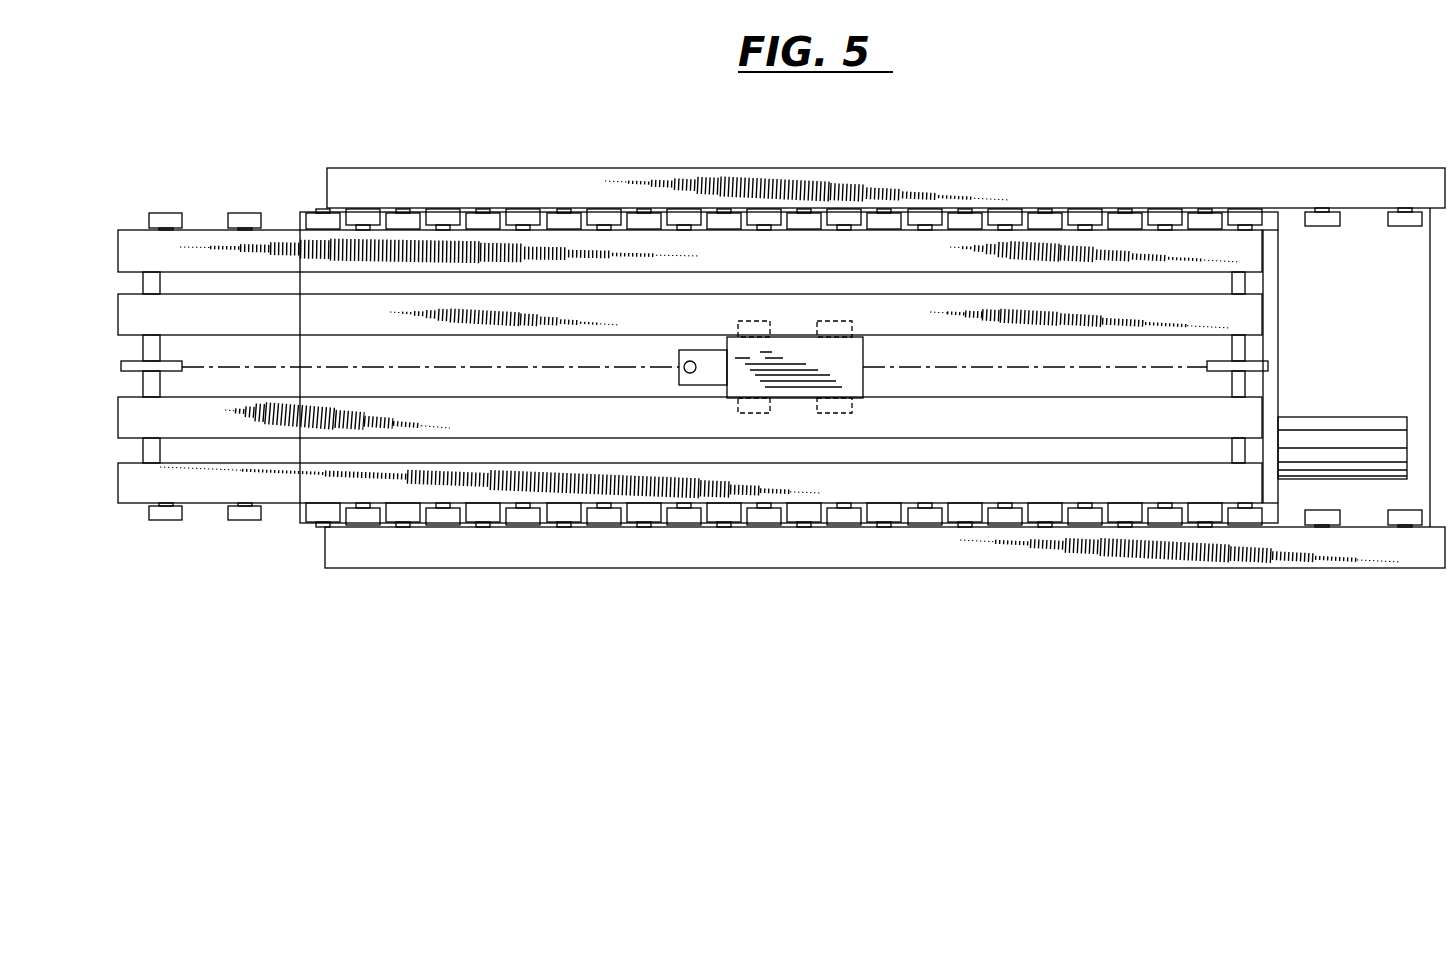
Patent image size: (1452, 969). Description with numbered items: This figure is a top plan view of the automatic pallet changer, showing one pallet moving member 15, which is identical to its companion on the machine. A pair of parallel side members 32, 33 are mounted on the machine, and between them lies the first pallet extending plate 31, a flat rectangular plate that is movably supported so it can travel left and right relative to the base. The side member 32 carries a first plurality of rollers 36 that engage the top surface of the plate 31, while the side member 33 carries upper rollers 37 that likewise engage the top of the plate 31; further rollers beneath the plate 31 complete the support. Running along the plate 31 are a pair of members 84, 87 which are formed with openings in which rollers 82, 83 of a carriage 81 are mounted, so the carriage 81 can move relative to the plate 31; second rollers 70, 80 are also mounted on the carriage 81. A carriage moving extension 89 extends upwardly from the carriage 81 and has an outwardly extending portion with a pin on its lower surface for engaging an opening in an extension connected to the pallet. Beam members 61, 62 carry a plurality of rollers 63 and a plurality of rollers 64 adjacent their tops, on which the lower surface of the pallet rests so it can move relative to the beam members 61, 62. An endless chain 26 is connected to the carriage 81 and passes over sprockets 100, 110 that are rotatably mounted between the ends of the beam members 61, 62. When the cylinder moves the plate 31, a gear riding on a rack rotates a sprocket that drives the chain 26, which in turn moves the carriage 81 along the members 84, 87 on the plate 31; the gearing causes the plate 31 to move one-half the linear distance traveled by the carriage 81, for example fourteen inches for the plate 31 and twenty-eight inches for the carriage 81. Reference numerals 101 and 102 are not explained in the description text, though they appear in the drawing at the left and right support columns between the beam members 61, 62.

The pallet moving member 15 is at (1397, 580).
The endless chain 26 is at (442, 367).
The first pallet extending plate 31 is at (1265, 389).
The side member 32 is at (1168, 548).
The side member 33 is at (1176, 190).
The first plurality of rollers 36 is at (402, 517).
The upper rollers 37 is at (446, 216).
The beam member 61 is at (1047, 482).
The beam member 62 is at (1243, 249).
The rollers 63 is at (165, 517).
The rollers 64 is at (402, 222).
The second roller 70 is at (845, 326).
The second roller 80 is at (835, 405).
The carriage 81 is at (788, 365).
The roller 82 is at (757, 403).
The roller 83 is at (738, 330).
The member 84 is at (368, 422).
The member 87 is at (260, 312).
The carriage moving extension 89 is at (706, 370).
The sprocket 100 is at (182, 368).
The left support column 101 is at (150, 283).
The right support column 102 is at (1240, 285).
The sprocket 110 is at (1263, 365).